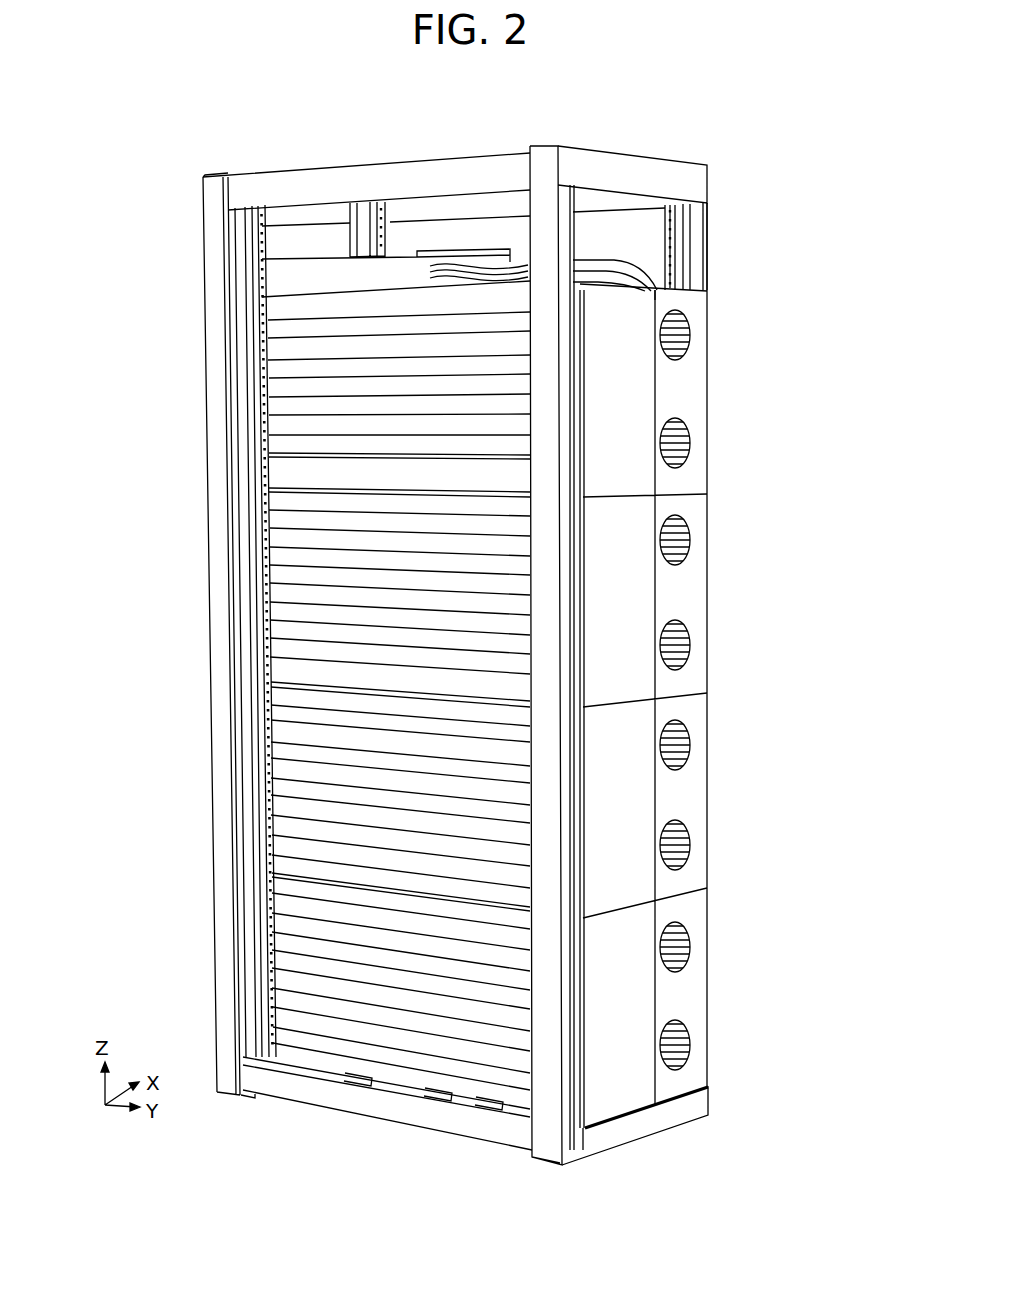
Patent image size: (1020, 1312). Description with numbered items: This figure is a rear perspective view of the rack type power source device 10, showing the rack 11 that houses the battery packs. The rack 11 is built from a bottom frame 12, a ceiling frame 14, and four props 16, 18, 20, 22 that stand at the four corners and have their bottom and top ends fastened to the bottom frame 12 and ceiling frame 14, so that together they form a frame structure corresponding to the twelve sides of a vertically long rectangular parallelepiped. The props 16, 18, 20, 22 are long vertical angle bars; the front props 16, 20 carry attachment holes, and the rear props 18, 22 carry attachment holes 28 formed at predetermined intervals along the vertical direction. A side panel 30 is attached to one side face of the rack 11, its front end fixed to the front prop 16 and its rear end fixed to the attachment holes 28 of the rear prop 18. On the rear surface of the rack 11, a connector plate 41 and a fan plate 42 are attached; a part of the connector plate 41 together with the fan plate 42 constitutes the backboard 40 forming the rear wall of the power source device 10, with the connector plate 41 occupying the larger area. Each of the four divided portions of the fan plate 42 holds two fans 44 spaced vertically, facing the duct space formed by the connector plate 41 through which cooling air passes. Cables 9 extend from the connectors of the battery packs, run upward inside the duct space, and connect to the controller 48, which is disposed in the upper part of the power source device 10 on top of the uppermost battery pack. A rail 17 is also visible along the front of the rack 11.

The cable 9 is at (622, 255).
The power source device 10 is at (385, 624).
The rack 11 is at (211, 131).
The bottom frame 12 is at (385, 1127).
The ceiling frame 14 is at (430, 160).
The prop 16 is at (217, 272).
The mounting rail 17 is at (240, 330).
The prop 18 is at (538, 173).
The prop 20 is at (355, 218).
The prop 22 is at (707, 232).
The attachment holes 28 is at (672, 263).
The side panel 30 is at (294, 472).
The backboard 40 is at (692, 665).
The connector plate 41 is at (640, 395).
The fan plate 42 is at (685, 407).
The fan 44 is at (677, 330).
The controller 48 is at (297, 258).